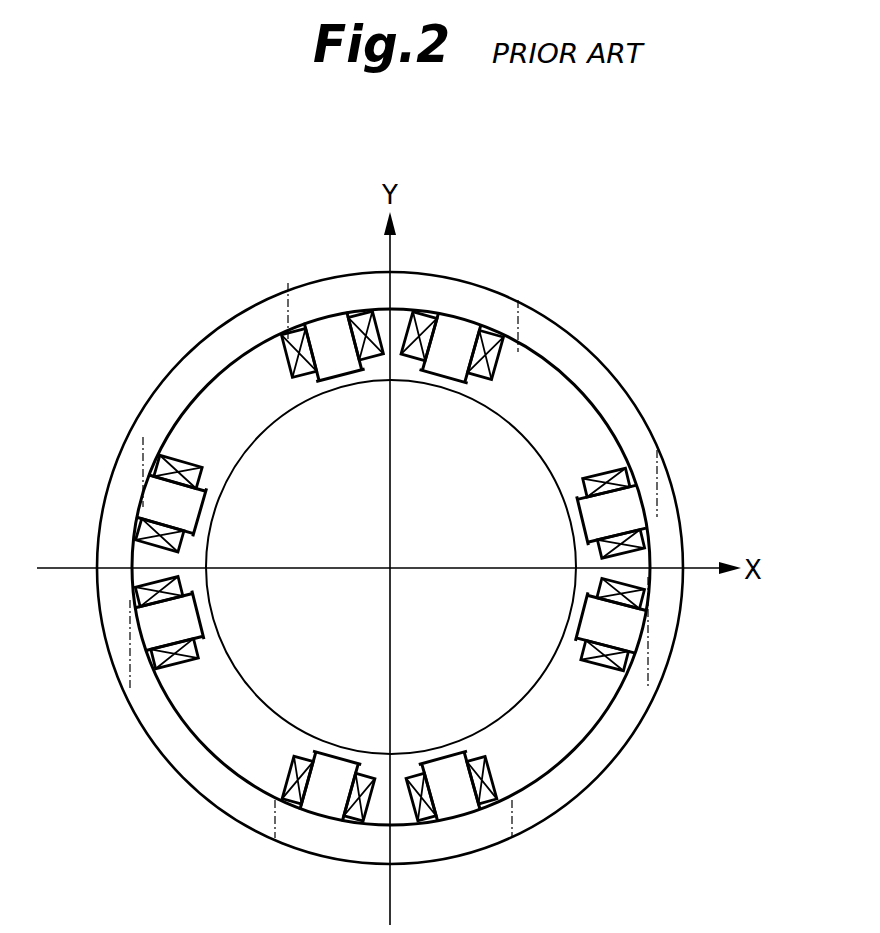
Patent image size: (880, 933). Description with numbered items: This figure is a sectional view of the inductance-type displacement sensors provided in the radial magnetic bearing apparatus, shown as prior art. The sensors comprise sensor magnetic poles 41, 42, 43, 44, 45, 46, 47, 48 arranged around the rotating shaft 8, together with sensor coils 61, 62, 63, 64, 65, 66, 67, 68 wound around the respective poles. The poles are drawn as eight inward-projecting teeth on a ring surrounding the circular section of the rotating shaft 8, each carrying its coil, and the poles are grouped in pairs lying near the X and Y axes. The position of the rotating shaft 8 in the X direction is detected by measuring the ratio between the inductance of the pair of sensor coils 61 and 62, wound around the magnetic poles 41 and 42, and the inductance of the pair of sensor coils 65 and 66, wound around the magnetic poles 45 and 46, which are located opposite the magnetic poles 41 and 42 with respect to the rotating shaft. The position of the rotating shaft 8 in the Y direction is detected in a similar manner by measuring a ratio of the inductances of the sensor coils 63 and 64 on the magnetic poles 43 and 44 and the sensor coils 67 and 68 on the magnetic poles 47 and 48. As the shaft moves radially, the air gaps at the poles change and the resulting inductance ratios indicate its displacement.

The rotating shaft 8 is at (500, 460).
The sensor magnetic pole 41 is at (630, 512).
The sensor magnetic pole 42 is at (615, 628).
The sensor magnetic pole 43 is at (453, 798).
The sensor magnetic pole 44 is at (332, 797).
The sensor magnetic pole 45 is at (162, 626).
The sensor magnetic pole 46 is at (167, 507).
The sensor magnetic pole 47 is at (334, 328).
The sensor magnetic pole 48 is at (457, 333).
The sensor coil 61 is at (597, 473).
The sensor coil 62 is at (598, 680).
The sensor coil 63 is at (497, 767).
The sensor coil 64 is at (293, 765).
The sensor coil 65 is at (188, 676).
The sensor coil 66 is at (183, 462).
The sensor coil 67 is at (292, 357).
The sensor coil 68 is at (507, 360).